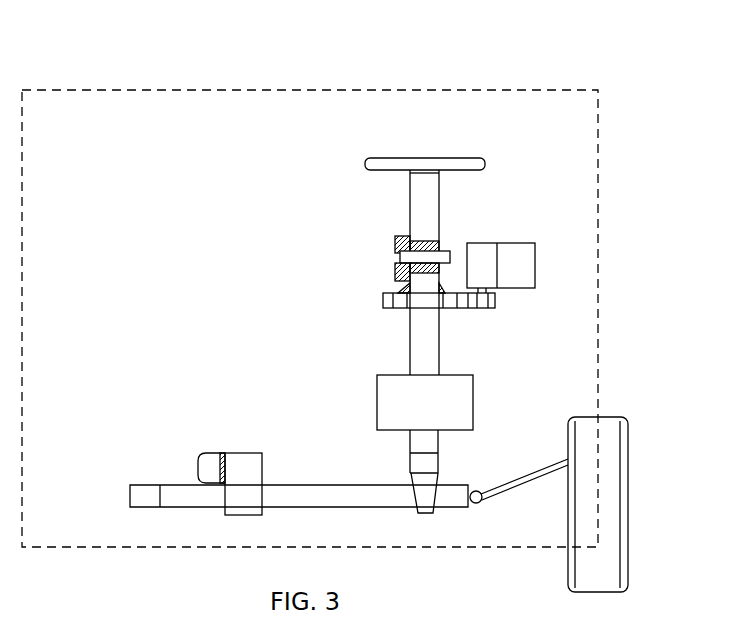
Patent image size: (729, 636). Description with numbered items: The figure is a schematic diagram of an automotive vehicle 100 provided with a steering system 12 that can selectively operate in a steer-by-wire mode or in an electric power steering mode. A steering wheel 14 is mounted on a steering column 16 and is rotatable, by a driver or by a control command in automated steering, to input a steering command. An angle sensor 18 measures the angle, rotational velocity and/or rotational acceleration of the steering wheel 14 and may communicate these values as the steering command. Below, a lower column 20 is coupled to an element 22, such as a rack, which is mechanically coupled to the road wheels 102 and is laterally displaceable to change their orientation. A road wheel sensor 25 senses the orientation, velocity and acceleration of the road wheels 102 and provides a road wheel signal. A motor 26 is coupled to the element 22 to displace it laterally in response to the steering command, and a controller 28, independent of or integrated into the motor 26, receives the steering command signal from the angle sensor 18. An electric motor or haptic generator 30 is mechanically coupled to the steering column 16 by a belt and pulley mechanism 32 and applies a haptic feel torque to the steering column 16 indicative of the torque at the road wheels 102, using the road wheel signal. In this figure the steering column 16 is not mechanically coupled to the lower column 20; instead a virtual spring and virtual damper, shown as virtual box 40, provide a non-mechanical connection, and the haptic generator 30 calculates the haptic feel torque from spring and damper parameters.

The steering system 12 is at (546, 46).
The steering wheel 14 is at (365, 162).
The steering column 16 is at (410, 201).
The angle sensor 18 is at (441, 172).
The lower column 20 is at (420, 439).
The element 22 is at (176, 491).
The road wheel sensor 25 is at (440, 464).
The motor 26 is at (240, 453).
The controller 28 is at (208, 453).
The haptic generator 30 is at (482, 243).
The belt and pulley mechanism 32 is at (474, 309).
The virtual box 40 is at (400, 375).
The automotive vehicle 100 is at (95, 548).
The road wheels 102 is at (622, 457).